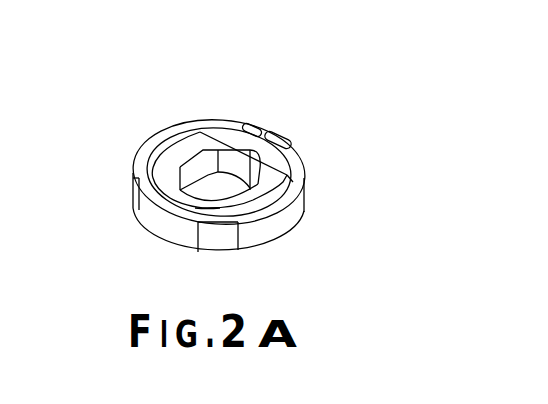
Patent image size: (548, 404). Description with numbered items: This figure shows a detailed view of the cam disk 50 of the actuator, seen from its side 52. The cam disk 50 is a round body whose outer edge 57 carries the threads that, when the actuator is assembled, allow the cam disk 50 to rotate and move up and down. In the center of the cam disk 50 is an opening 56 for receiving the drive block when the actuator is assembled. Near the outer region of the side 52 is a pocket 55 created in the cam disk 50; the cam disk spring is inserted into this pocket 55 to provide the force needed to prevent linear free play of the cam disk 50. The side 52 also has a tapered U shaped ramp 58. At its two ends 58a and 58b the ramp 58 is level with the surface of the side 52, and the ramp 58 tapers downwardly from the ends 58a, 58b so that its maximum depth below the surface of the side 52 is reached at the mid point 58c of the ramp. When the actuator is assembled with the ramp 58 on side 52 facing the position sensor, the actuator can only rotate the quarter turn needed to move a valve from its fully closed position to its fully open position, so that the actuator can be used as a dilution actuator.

The cam disk 50 is at (191, 37).
The side 52 is at (148, 147).
The pocket 55 is at (262, 127).
The opening 56 is at (212, 193).
The outer edge 57 is at (270, 224).
The tapered U shaped ramp 58 is at (163, 185).
The end 58a is at (200, 131).
The end 58b is at (286, 176).
The mid point 58c is at (208, 207).